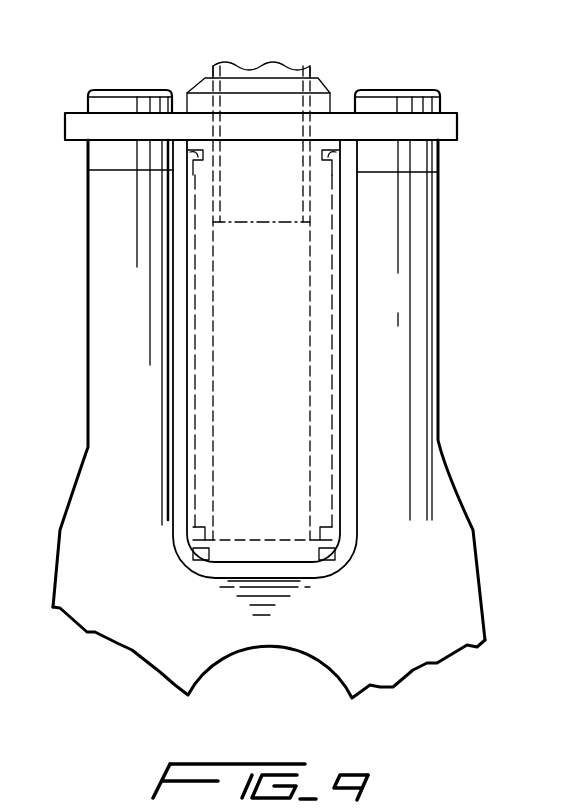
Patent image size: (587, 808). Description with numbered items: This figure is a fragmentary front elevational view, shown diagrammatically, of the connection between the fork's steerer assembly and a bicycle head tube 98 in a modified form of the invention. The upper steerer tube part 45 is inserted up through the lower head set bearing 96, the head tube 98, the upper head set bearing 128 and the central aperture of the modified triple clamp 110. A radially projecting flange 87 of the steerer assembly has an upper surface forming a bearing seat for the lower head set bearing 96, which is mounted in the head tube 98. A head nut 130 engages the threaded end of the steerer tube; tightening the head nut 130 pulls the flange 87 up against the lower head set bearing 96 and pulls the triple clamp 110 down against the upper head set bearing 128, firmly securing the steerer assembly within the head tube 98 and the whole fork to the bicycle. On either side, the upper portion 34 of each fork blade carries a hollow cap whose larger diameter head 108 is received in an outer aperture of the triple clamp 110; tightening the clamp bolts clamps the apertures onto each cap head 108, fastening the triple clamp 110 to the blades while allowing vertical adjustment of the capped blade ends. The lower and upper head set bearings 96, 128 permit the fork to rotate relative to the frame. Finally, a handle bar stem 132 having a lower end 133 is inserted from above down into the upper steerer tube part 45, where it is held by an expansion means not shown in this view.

The upper portion 34 is at (87, 272).
The upper steerer tube part 45 is at (197, 406).
The radially projecting flange 87 is at (278, 538).
The lower head set bearing 96 is at (340, 546).
The head tube 98 is at (342, 400).
The head 108 is at (98, 155).
The triple clamp 110 is at (457, 119).
The upper head set bearing 128 is at (337, 158).
The head nut 130 is at (329, 93).
The handle bar stem 132 is at (306, 70).
The lower end 133 is at (272, 222).